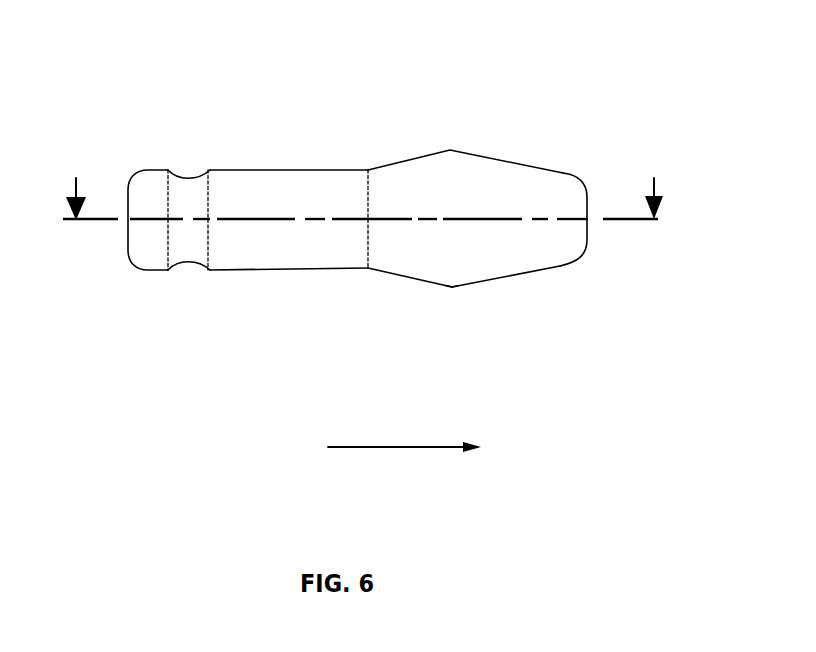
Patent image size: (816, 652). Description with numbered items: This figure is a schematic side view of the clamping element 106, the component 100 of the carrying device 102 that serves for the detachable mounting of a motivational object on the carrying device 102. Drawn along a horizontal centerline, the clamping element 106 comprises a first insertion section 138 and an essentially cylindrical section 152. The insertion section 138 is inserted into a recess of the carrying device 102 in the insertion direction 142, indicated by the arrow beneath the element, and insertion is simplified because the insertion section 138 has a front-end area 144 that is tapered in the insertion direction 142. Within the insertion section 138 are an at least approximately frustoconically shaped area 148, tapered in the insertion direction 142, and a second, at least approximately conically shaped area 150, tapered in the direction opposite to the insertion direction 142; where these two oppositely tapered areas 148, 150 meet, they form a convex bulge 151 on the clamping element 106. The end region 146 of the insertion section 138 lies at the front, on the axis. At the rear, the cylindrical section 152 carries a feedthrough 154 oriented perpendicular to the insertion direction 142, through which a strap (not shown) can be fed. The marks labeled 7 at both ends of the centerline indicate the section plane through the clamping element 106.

The section line 7- 7 is at (363, 182).
The device 100 is at (155, 125).
The carrying device 102 is at (230, 120).
The clamping element 106 is at (345, 256).
The insertion section 138 is at (474, 167).
The insertion direction 142 is at (395, 447).
The front-end area 144 is at (590, 237).
The distal axis point 146 is at (620, 217).
The frustoconically shaped area 148 is at (538, 273).
The conically shaped area 150 is at (408, 281).
The convex bulge 151 is at (453, 288).
The cylindrical section 152 is at (225, 273).
The feedthrough 154 is at (178, 268).